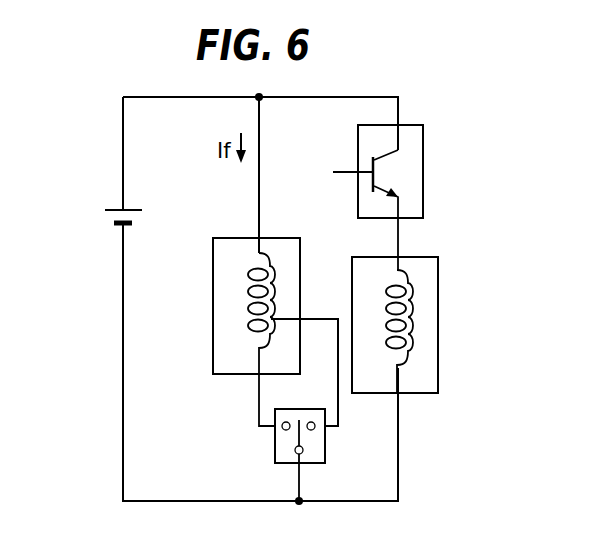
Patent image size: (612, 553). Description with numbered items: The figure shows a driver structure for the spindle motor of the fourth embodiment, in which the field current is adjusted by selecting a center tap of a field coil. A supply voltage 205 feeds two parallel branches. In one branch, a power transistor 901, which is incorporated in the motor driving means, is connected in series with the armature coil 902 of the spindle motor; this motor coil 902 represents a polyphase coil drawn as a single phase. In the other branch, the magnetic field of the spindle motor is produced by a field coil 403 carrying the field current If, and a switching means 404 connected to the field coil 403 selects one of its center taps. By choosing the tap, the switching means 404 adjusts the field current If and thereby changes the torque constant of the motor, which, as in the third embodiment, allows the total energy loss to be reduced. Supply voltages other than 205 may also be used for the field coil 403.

The supply voltage 205 is at (115, 209).
The field coil 403 is at (283, 237).
The switching means 404 is at (326, 453).
The power transistor 901 is at (423, 141).
The armature coil 902 is at (438, 272).